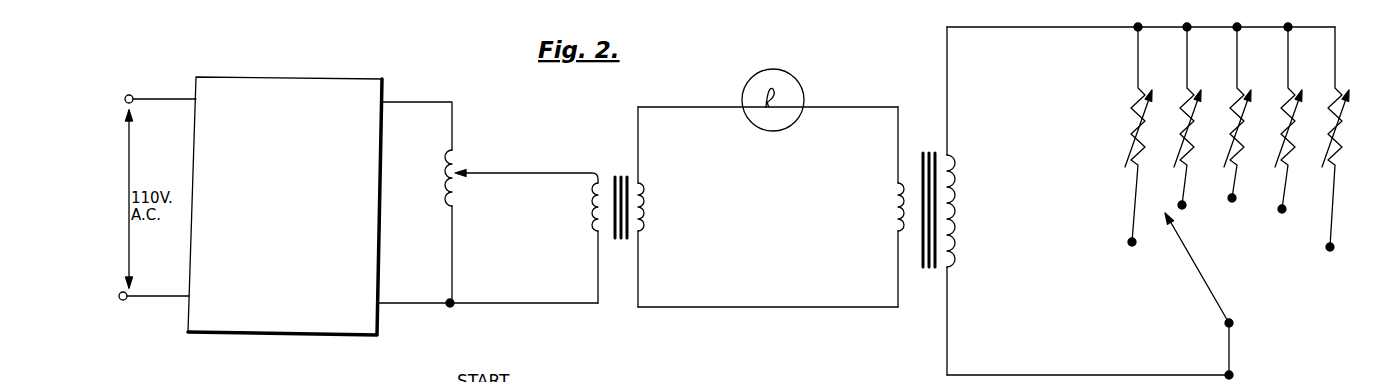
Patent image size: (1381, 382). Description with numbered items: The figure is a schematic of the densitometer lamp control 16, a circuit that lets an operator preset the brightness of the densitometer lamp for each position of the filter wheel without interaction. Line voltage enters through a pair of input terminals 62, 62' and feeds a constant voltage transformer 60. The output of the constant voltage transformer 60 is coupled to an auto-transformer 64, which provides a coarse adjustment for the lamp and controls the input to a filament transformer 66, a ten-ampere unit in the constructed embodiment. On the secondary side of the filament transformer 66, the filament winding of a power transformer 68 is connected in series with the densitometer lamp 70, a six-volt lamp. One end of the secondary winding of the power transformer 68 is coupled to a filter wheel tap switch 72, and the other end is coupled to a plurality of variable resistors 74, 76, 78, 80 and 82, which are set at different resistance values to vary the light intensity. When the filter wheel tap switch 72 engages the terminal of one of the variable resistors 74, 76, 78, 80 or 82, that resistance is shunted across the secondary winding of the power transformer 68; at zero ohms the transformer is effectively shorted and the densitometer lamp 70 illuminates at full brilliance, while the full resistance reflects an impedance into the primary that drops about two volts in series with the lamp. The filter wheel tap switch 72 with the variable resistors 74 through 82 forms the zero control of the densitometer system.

The densitometer lamp control 16 is at (445, 341).
The constant voltage transformer 60 is at (320, 78).
The input terminal 62 is at (160, 113).
The input terminal 62' is at (154, 284).
The auto-transformer 64 is at (457, 197).
The filament transformer 66 is at (650, 236).
The power transformer 68 is at (909, 274).
The densitometer lamp 70 is at (778, 131).
The filter wheel tap switch 72 is at (1197, 270).
The variable resistor 74 is at (1128, 121).
The variable resistor 76 is at (1173, 108).
The variable resistor 78 is at (1222, 108).
The variable resistor 80 is at (1275, 107).
The variable resistor 82 is at (1325, 107).